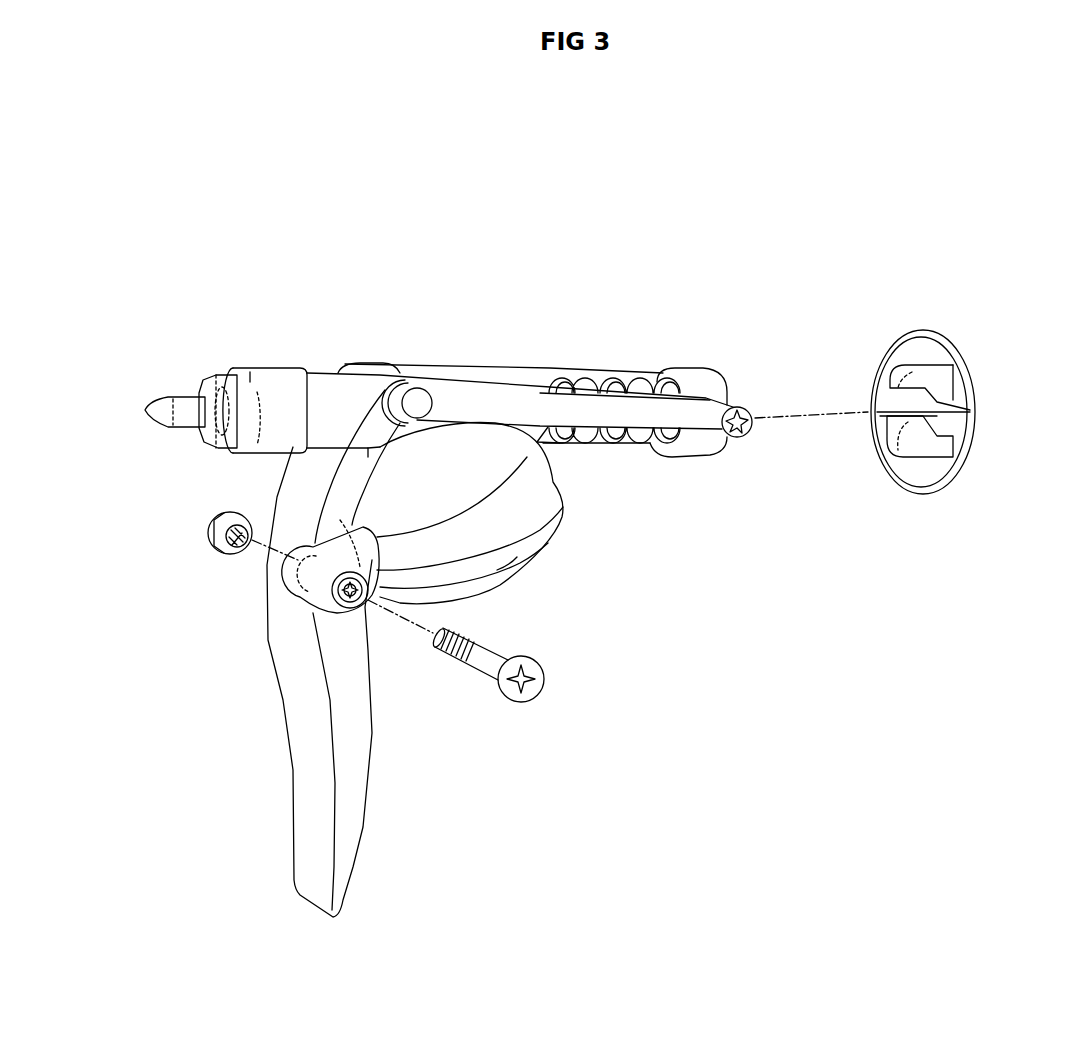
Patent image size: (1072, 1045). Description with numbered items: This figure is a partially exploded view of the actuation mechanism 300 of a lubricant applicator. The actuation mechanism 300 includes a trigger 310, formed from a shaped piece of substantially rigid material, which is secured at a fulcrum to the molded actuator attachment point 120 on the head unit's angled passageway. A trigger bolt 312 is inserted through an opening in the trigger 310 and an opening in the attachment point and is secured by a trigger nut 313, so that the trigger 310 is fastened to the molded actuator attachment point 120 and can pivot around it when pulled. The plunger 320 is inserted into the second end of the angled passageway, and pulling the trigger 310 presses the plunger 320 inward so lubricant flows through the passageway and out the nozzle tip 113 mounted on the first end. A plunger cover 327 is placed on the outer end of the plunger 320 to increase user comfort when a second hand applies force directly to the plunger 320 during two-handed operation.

The actuation mechanism 300 is at (697, 387).
The plunger 320 is at (718, 385).
The nozzle tip 113 is at (147, 406).
The plunger cover 327 is at (975, 470).
The trigger nut 313 is at (209, 552).
The molded actuator attachment point 120 is at (292, 578).
The trigger bolt 312 is at (540, 697).
The trigger 310 is at (318, 807).